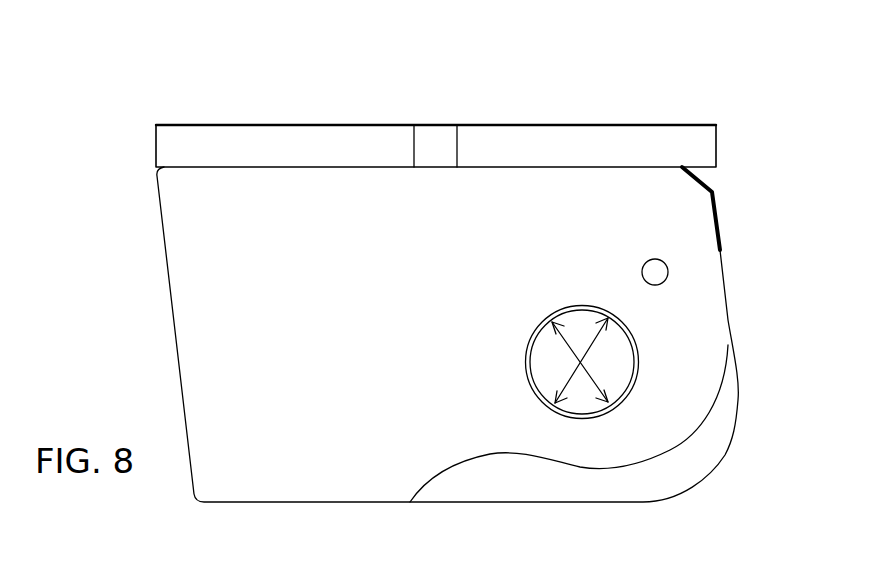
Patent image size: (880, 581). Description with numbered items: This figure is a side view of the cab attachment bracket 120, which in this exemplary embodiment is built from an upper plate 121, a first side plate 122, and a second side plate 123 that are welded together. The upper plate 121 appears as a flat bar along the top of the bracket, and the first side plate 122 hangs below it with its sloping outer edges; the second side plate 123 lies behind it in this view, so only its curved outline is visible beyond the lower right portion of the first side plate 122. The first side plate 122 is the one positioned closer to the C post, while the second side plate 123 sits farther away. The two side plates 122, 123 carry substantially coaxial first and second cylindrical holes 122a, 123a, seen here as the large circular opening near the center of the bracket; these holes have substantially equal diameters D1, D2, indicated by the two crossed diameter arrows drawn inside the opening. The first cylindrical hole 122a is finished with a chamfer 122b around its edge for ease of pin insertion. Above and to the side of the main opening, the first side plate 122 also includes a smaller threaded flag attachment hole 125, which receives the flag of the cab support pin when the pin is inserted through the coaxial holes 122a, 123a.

The cab attachment bracket 120 is at (663, 79).
The upper plate 121 is at (520, 130).
The first side plate 122 is at (698, 222).
The first cylindrical hole 122a is at (557, 365).
The chamfer 122b is at (566, 307).
The second side plate 123 is at (707, 452).
The second cylindrical hole 123a is at (626, 358).
The threaded flag attachment hole 125 is at (652, 259).
The diameter of first cylindrical hole D1 is at (597, 342).
The diameter of second cylindrical hole D2 is at (600, 375).